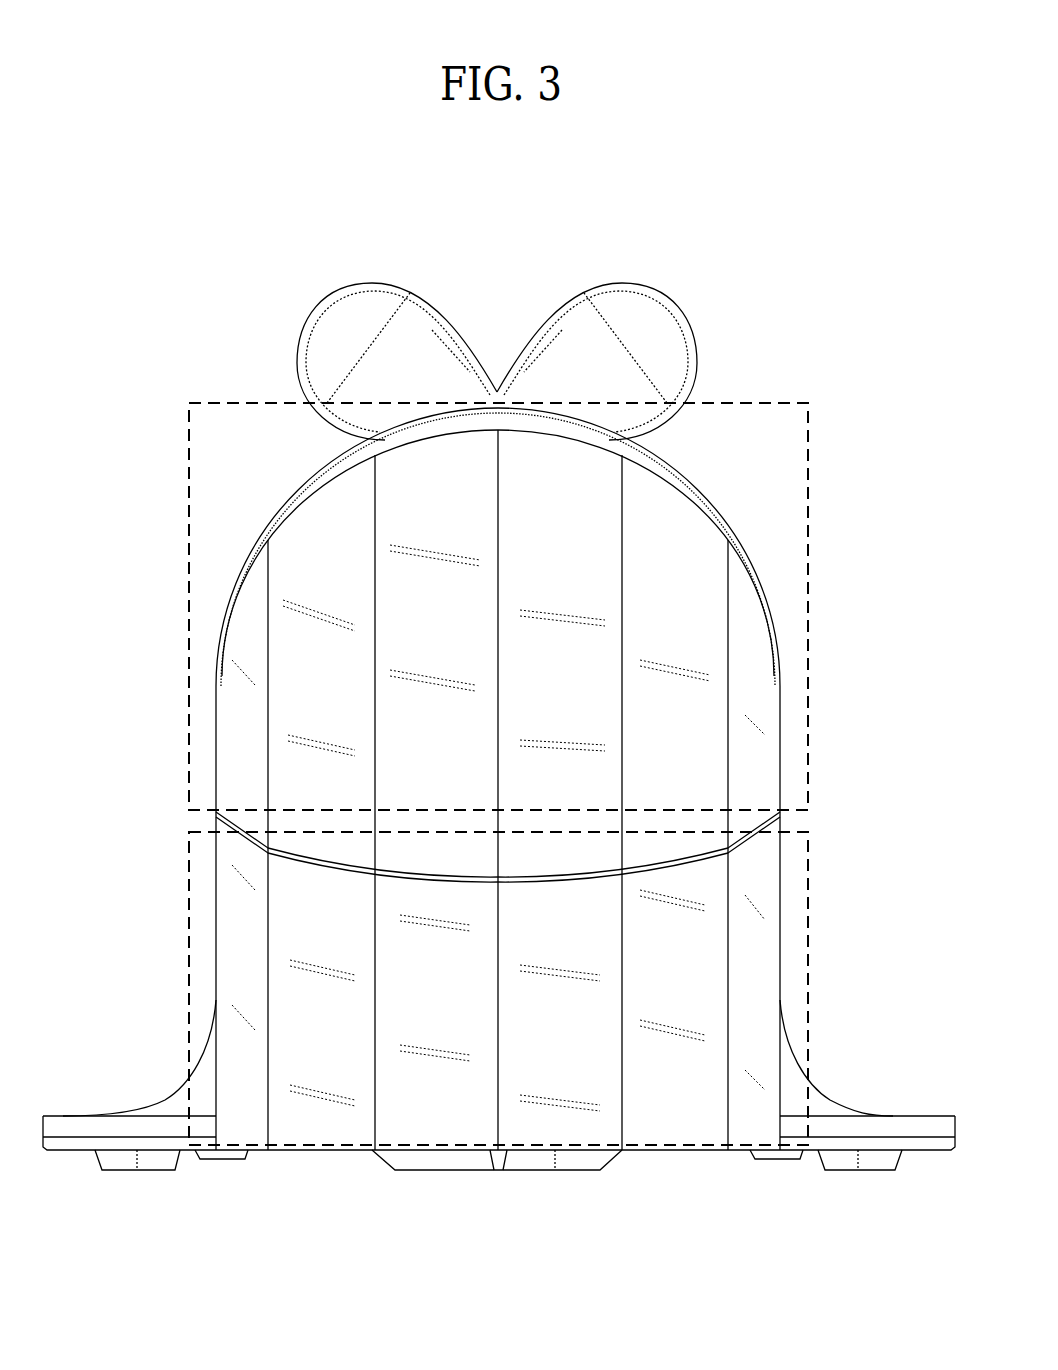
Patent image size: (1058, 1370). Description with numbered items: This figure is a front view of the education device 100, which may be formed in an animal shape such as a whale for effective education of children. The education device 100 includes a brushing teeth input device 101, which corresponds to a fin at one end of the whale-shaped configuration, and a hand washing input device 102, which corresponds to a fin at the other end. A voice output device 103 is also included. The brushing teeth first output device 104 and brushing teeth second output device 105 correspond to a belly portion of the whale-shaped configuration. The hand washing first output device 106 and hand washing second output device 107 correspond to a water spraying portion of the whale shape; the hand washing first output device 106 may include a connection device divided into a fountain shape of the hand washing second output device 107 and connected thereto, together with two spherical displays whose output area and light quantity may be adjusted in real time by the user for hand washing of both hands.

The education device 100 is at (872, 174).
The brushing teeth input device 101 is at (90, 1132).
The hand washing input device 102 is at (925, 1132).
The voice output device 103 is at (443, 1160).
The brushing teeth first output device 104 is at (808, 885).
The brushing teeth second output device 105 is at (808, 533).
The hand washing first output device 106 is at (320, 348).
The hand washing second output device 107 is at (677, 343).